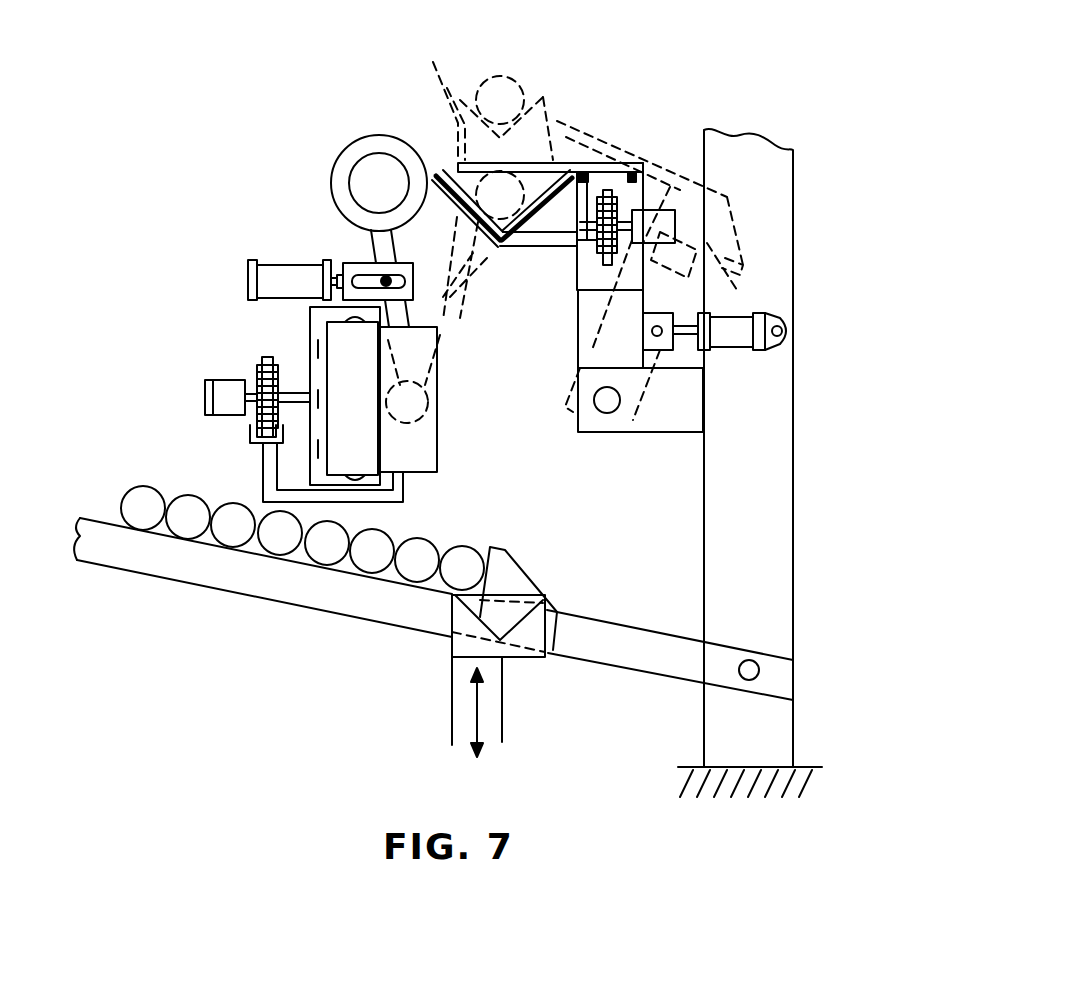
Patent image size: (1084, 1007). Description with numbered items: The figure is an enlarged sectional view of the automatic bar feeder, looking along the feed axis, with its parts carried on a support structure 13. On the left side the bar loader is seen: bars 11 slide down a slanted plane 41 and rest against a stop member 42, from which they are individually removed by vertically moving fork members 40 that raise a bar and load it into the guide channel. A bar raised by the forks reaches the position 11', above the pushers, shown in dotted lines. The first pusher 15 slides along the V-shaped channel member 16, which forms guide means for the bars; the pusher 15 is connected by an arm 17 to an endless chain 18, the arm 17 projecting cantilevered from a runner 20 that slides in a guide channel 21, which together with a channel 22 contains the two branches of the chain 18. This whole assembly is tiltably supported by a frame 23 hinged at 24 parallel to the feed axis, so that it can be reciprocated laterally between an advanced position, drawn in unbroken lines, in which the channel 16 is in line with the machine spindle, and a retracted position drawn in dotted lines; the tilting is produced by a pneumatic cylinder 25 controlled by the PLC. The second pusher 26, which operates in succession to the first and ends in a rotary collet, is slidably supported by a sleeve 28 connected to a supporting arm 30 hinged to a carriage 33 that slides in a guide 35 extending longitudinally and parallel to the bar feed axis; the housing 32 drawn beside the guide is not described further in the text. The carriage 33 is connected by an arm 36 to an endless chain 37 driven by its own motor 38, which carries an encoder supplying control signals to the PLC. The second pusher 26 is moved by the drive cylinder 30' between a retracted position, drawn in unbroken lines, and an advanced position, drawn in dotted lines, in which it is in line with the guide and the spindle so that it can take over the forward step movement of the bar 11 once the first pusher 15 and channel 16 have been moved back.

The bar 11 is at (302, 538).
The raised bar position 11' is at (501, 73).
The support structure 13 is at (766, 433).
The pusher 15 is at (452, 165).
The channel member 16 is at (519, 233).
The arm 17 is at (581, 165).
The endless chain 18 is at (582, 336).
The runner 20 is at (608, 176).
The guide channel 21 is at (576, 255).
The channel 22 is at (581, 278).
The frame 23 is at (580, 367).
The hinge 24 is at (604, 404).
The pneumatic cylinder 25 is at (736, 327).
The second pusher 26 is at (380, 175).
The sleeve 28 is at (342, 172).
The supporting arm 30 is at (343, 264).
The drive cylinder 30' is at (263, 262).
The housing 32 is at (437, 415).
The carriage 33 is at (343, 338).
The guide 35 is at (312, 342).
The arm 36 is at (263, 470).
The endless chain 37 is at (255, 420).
The motor 38 is at (225, 390).
The fork members 40 is at (428, 684).
The slanted plane 41 is at (235, 567).
The stop member 42 is at (512, 572).